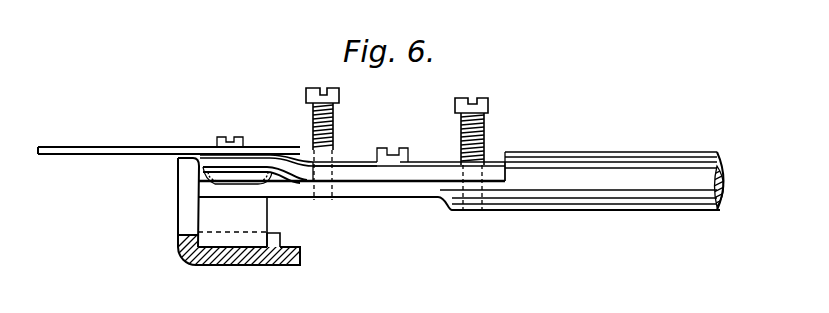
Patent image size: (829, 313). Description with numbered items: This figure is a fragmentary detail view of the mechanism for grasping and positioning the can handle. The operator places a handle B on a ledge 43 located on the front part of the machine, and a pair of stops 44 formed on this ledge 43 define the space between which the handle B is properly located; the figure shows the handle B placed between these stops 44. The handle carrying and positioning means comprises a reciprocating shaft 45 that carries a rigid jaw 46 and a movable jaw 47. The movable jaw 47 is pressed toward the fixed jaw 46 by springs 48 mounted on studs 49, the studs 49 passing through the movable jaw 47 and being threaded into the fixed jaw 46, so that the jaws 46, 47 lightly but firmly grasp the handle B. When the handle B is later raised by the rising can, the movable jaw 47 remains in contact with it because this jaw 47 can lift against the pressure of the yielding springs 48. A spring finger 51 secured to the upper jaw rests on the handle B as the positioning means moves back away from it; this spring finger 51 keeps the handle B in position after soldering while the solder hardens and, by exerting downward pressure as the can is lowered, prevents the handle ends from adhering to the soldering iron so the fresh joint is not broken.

The ledge 43 is at (233, 266).
The stops 44 is at (281, 238).
The reciprocating shaft 45 is at (622, 210).
The rigid jaw 46 is at (370, 190).
The movable jaw 47 is at (268, 158).
The springs 48 is at (334, 129).
The studs 49 is at (340, 96).
The spring finger 51 is at (100, 153).
The handle B is at (260, 214).